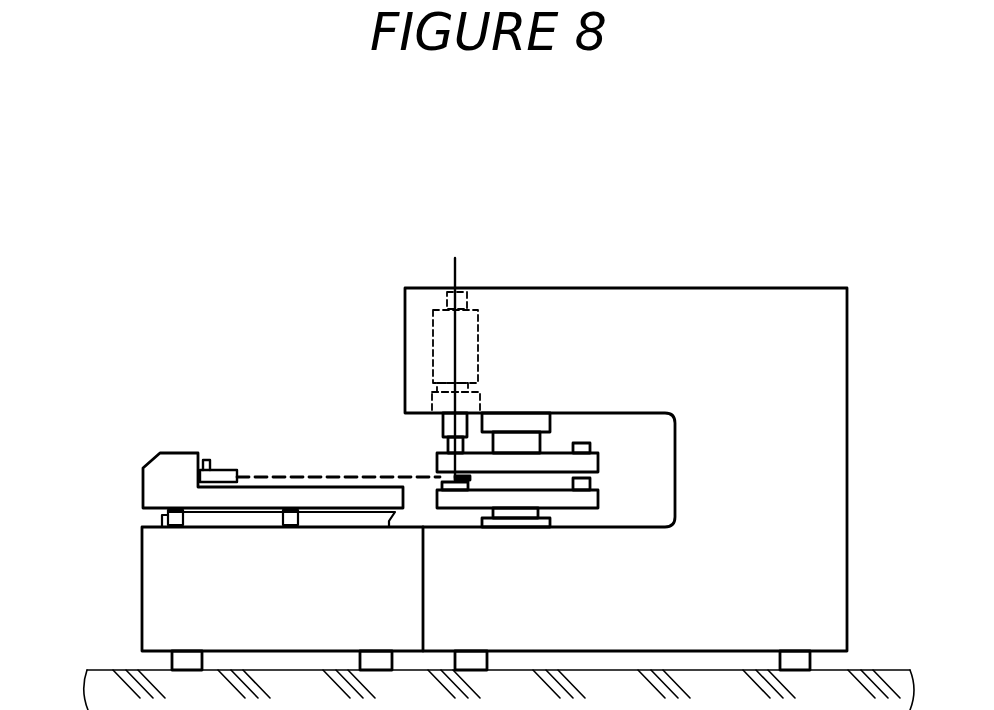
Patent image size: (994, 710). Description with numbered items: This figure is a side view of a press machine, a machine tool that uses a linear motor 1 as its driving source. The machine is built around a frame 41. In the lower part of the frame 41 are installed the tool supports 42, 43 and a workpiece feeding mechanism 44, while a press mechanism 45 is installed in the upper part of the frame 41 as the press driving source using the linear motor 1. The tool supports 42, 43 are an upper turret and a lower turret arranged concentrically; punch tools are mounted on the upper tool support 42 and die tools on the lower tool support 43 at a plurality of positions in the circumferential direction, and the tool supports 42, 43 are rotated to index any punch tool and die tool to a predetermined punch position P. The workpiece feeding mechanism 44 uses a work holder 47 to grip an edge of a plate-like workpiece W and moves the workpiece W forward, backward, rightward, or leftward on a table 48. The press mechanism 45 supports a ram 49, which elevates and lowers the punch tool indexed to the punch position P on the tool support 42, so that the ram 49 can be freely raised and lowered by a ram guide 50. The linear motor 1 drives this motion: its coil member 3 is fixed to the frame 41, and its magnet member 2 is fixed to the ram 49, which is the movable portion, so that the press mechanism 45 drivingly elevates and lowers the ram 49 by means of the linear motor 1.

The linear motor 1 is at (399, 314).
The magnet member 2 is at (447, 298).
The coil member 3 is at (433, 328).
The punch position P is at (455, 262).
The frame 41 is at (823, 410).
The tool support 42 is at (435, 460).
The tool support 43 is at (500, 507).
The workpiece feeding mechanism 44 is at (141, 466).
The press mechanism 45 is at (507, 328).
The work holder 47 is at (222, 470).
The table 48 is at (273, 497).
The ram 49 is at (443, 425).
The ram guide 50 is at (440, 400).
The workpiece W is at (323, 473).